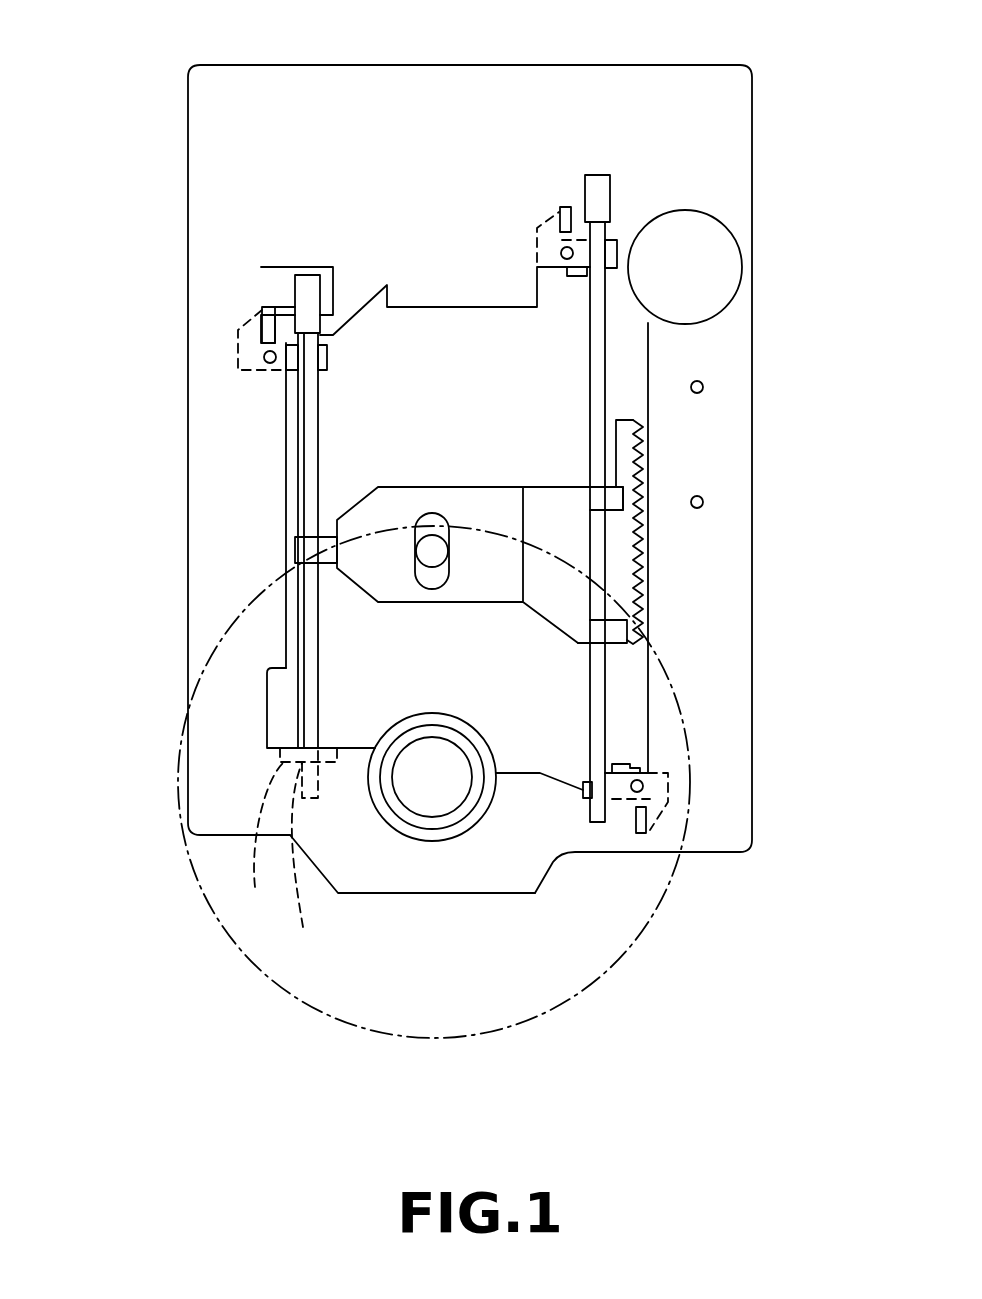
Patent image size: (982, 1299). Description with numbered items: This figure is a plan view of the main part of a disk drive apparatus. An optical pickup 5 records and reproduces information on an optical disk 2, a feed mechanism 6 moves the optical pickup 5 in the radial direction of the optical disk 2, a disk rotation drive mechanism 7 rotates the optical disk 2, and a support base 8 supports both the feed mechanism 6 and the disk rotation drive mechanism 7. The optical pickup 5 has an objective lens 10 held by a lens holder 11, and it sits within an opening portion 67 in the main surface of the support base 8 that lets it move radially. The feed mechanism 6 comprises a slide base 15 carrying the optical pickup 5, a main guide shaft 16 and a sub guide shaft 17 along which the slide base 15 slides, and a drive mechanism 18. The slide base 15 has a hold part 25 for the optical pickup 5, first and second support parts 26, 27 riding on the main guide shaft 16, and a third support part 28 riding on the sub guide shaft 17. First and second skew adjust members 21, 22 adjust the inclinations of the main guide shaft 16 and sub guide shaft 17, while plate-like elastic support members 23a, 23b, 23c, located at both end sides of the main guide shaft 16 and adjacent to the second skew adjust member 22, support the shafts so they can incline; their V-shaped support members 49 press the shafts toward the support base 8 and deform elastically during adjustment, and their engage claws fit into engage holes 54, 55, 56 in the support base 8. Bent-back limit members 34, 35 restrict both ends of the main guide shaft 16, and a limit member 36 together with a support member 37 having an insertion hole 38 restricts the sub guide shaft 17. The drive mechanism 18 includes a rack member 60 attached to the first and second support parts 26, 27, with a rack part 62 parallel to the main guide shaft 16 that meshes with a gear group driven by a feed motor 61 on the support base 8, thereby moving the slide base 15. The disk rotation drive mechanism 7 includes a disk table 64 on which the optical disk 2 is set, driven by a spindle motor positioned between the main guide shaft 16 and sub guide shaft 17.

The optical disk 2 is at (537, 997).
The optical pickup 5 is at (416, 624).
The feed mechanism 6 is at (729, 200).
The disk rotation drive mechanism 7 is at (390, 862).
The support base 8 is at (212, 447).
The objective lens 10 is at (433, 550).
The lens holder 11 is at (430, 516).
The slide base 15 is at (498, 603).
The main guide shaft 16 is at (598, 383).
The sub guide shaft 17 is at (306, 463).
The drive mechanism 18 is at (705, 531).
The first skew adjust member 21 is at (600, 190).
The second skew adjust member 22 is at (307, 290).
The elastic support member 23a is at (675, 799).
The elastic support member 23b is at (537, 258).
The elastic support member 23c is at (238, 352).
The hold part 25 is at (553, 487).
The first support part 26 is at (615, 647).
The second support part 27 is at (617, 497).
The third support part 28 is at (300, 548).
The limit member 34 is at (630, 764).
The limit member 35 is at (578, 278).
The limit member 36 is at (285, 312).
The support member 37 is at (252, 841).
The insertion hole 38 is at (298, 861).
The support member 49 is at (327, 360).
The engage hole 54 is at (641, 833).
The engage hole 55 is at (565, 207).
The engage hole 56 is at (263, 282).
The rack member 60 is at (623, 577).
The feed motor 61 is at (707, 267).
The rack part 62 is at (648, 547).
The disk table 64 is at (443, 800).
The opening portion 67 is at (427, 315).